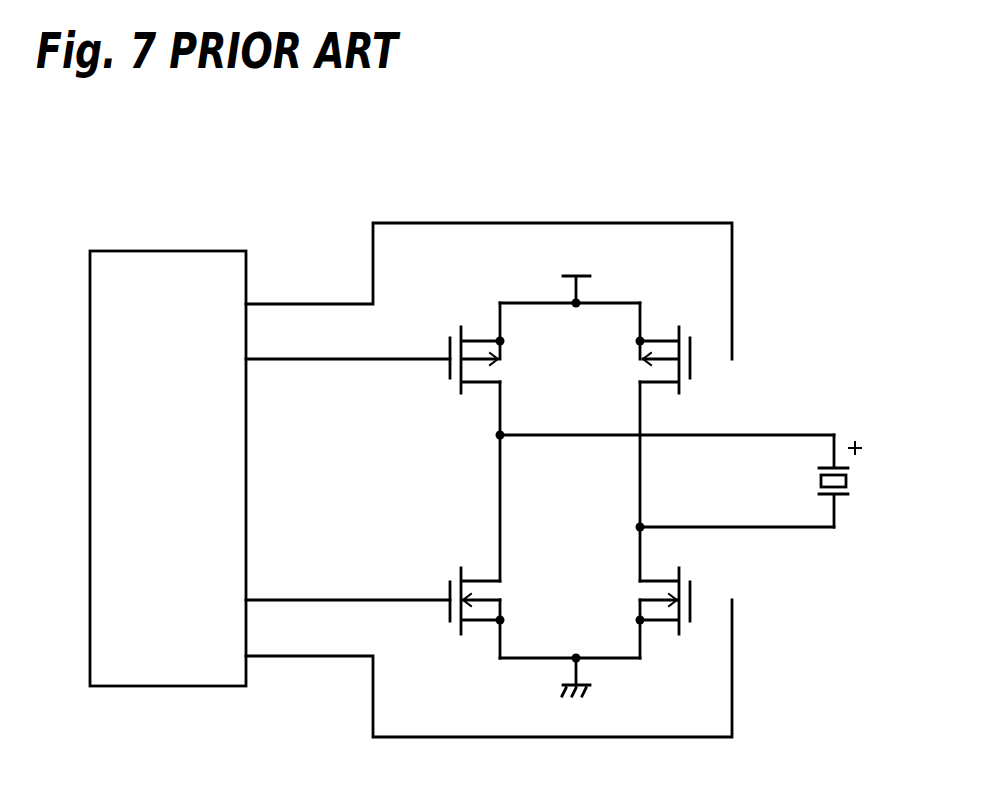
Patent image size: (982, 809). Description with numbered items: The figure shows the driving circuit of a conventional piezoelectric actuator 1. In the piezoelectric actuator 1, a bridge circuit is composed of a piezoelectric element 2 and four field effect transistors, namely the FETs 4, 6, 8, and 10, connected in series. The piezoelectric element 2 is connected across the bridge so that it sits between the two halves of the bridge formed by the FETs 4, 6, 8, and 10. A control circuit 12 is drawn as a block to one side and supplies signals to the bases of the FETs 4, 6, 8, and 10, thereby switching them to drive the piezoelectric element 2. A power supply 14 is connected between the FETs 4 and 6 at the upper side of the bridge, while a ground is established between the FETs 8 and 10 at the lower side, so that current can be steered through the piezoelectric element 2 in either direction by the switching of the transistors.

The piezoelectric actuator 1 is at (777, 167).
The piezoelectric element 2 is at (843, 496).
The FET 4 is at (461, 393).
The FET 6 is at (686, 388).
The FET 8 is at (458, 577).
The FET 10 is at (686, 574).
The control circuit 12 is at (160, 250).
The power supply 14 is at (592, 262).